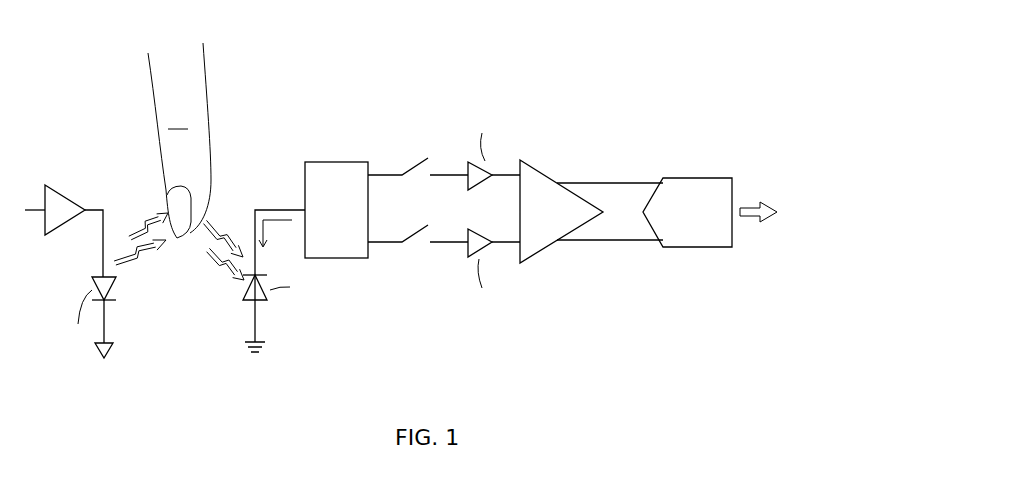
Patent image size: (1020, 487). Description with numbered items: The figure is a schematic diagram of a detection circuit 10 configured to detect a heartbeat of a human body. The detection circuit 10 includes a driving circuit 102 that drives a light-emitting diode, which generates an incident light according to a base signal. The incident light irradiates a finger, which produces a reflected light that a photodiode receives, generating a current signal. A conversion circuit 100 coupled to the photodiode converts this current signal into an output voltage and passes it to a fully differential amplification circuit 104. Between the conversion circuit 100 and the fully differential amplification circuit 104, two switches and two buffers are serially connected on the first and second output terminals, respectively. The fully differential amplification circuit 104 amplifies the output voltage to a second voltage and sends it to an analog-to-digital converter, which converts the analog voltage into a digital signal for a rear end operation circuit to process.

The detection circuit 10 is at (721, 69).
The conversion circuit 100 is at (336, 161).
The driving circuit 102 is at (70, 195).
The fully differential amplification circuit 104 is at (541, 172).